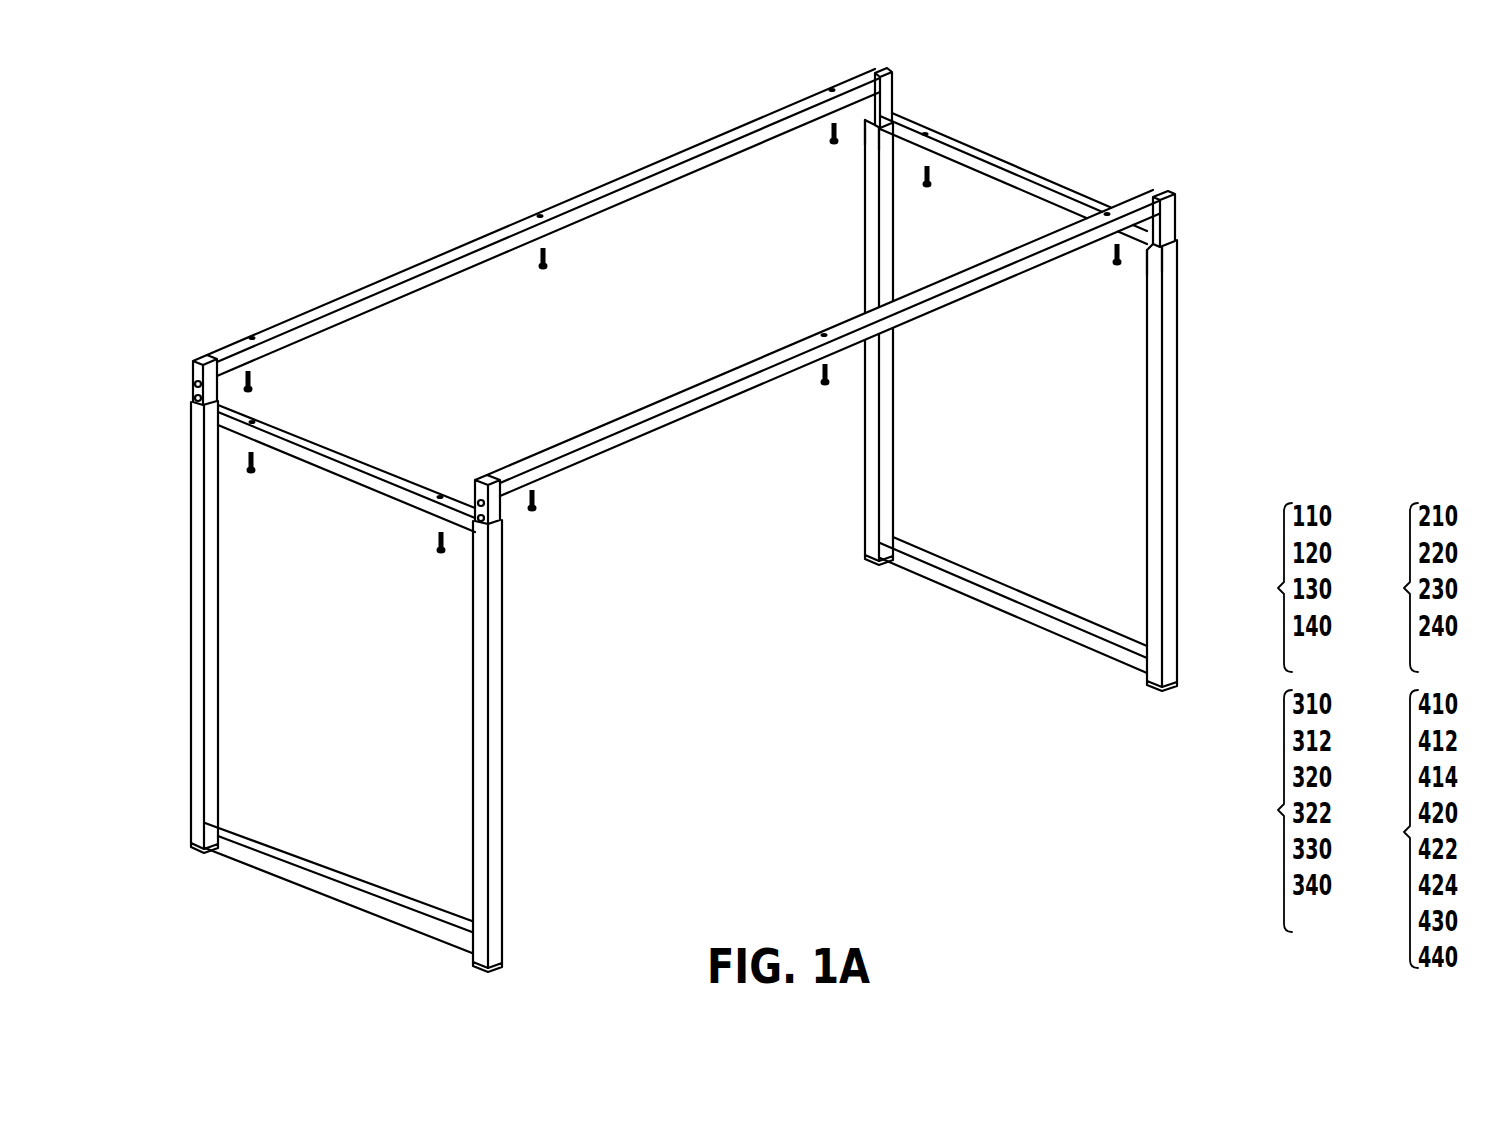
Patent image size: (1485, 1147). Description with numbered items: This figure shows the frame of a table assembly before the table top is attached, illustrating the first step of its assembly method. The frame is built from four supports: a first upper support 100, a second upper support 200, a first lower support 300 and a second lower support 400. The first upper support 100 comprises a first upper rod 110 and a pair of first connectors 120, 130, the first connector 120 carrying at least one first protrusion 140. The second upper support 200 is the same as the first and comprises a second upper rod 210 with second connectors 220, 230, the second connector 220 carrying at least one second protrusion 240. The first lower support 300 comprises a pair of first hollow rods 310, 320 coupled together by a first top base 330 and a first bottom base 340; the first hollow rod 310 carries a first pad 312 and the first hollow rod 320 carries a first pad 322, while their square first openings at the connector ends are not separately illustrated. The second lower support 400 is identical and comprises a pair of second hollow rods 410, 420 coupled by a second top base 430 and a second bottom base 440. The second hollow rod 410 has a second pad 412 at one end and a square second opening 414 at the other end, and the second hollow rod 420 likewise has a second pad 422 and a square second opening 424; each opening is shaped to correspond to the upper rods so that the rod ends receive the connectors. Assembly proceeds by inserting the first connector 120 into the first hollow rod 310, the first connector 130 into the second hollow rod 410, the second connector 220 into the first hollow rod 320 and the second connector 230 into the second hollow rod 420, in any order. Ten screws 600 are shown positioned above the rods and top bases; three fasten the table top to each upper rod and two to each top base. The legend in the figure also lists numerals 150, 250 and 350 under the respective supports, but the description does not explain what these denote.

The first upper support 100 is at (1261, 587).
The first upper rod 110 is at (720, 395).
The first connector 120 is at (492, 514).
The first connector 130 is at (1170, 218).
The first protrusion 140 is at (474, 488).
The front frame fastener 150 is at (1312, 661).
The second upper support 200 is at (1386, 587).
The second upper rod 210 is at (496, 232).
The second connector 220 is at (192, 367).
The second connector 230 is at (888, 98).
The second protrusion 240 is at (192, 394).
The rear frame fastener 250 is at (1438, 661).
The first lower support 300 is at (1261, 811).
The first hollow rod 310 is at (504, 702).
The first pad 312 is at (503, 968).
The first hollow rod 320 is at (212, 628).
The first pad 322 is at (195, 848).
The first top base 330 is at (321, 451).
The first bottom base 340 is at (327, 888).
The left leg assembly fastener 350 is at (1312, 921).
The second lower support 400 is at (1386, 829).
The second hollow rod 410 is at (1178, 424).
The second pad 412 is at (1156, 687).
The second opening 414 is at (1157, 260).
The second hollow rod 420 is at (889, 370).
The second pad 422 is at (872, 562).
The second opening 424 is at (870, 131).
The second top base 430 is at (1010, 168).
The second bottom base 440 is at (1043, 625).
The screws 600 is at (256, 379).